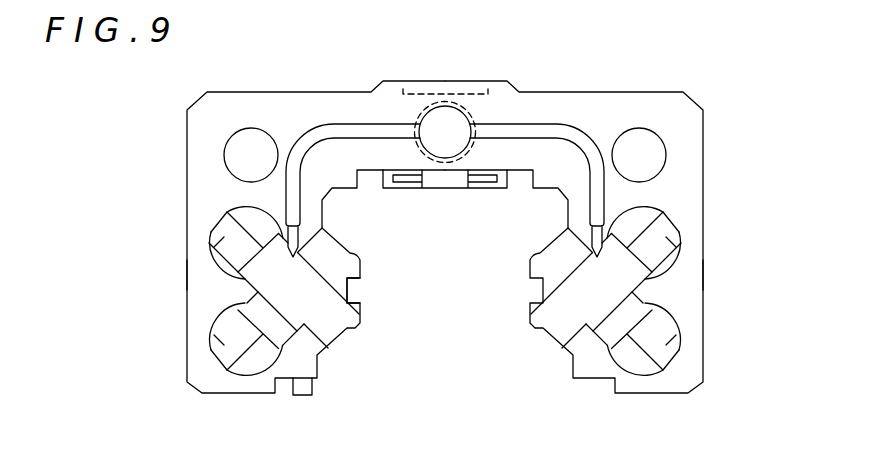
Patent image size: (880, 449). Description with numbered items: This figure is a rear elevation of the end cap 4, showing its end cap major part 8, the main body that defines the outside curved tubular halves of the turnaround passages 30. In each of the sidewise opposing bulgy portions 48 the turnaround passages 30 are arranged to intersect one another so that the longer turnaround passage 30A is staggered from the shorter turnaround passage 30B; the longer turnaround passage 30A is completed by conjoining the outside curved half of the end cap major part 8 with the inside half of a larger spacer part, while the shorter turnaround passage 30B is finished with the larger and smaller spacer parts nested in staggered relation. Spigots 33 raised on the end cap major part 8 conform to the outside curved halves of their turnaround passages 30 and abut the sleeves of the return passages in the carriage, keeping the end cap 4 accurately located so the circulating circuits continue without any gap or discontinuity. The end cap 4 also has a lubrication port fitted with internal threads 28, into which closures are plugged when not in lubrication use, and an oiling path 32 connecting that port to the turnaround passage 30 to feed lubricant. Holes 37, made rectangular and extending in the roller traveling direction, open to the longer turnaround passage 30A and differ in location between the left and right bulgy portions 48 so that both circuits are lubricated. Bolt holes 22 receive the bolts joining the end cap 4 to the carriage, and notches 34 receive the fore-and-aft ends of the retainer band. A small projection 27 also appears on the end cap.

The end cap 4 is at (711, 128).
The end cap major part 8 is at (300, 118).
The bolt holes 22 is at (238, 153).
The projection 27 is at (310, 388).
The internal threads 28 is at (458, 127).
The turnaround passages 30 is at (252, 323).
The longer turnaround passage 30A is at (322, 315).
The shorter turnaround passage 30B is at (242, 338).
The oiling path 32 is at (347, 125).
The spigots 33 is at (210, 242).
The notches 34 is at (348, 293).
The holes 37 is at (243, 243).
The bulgy portions 48 is at (202, 270).